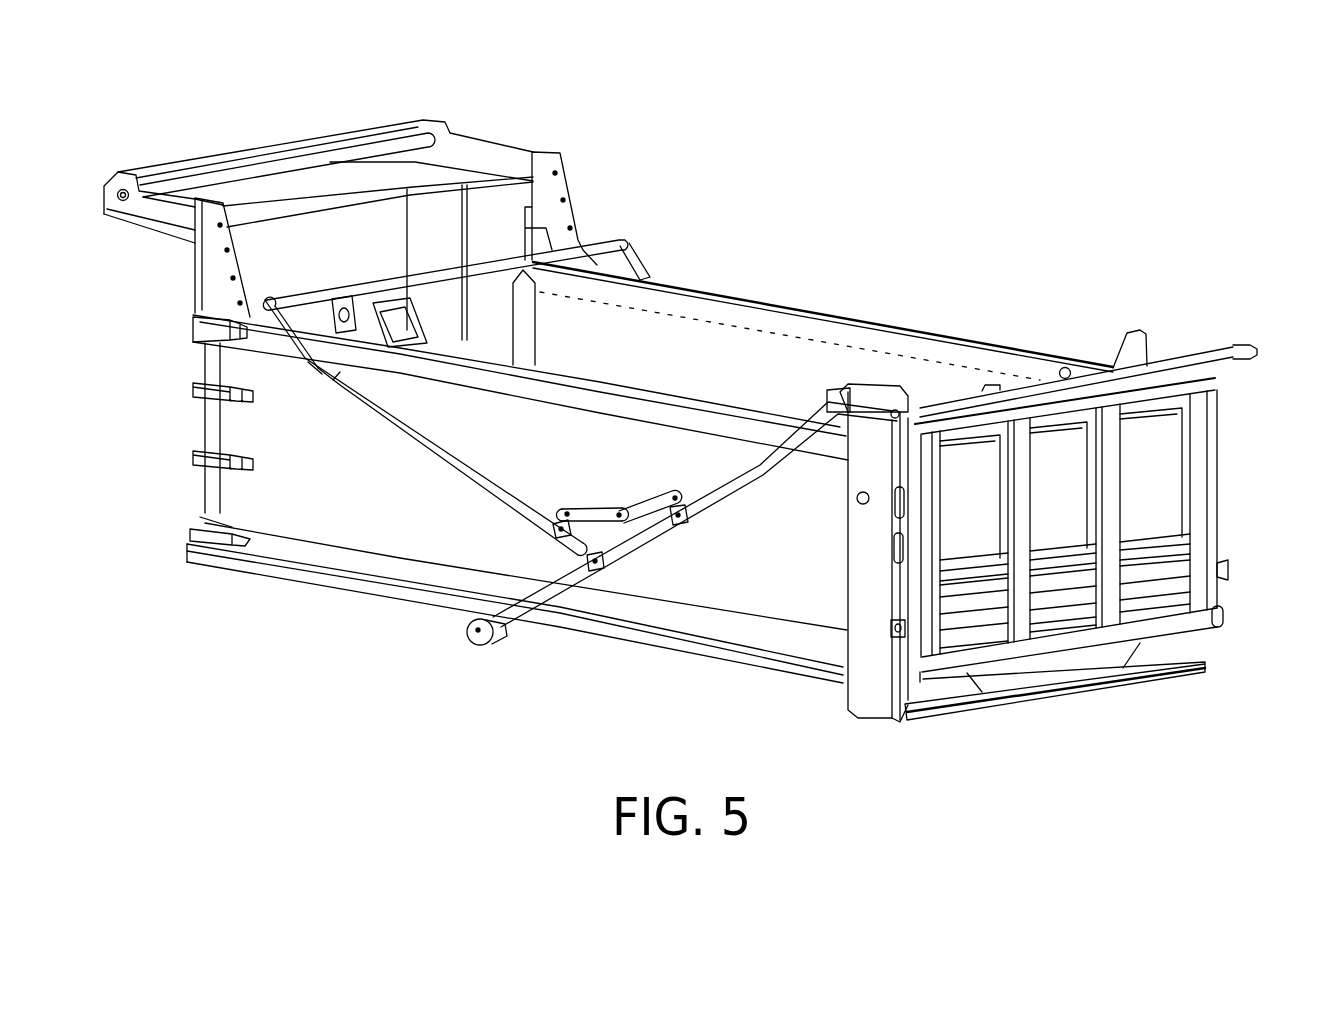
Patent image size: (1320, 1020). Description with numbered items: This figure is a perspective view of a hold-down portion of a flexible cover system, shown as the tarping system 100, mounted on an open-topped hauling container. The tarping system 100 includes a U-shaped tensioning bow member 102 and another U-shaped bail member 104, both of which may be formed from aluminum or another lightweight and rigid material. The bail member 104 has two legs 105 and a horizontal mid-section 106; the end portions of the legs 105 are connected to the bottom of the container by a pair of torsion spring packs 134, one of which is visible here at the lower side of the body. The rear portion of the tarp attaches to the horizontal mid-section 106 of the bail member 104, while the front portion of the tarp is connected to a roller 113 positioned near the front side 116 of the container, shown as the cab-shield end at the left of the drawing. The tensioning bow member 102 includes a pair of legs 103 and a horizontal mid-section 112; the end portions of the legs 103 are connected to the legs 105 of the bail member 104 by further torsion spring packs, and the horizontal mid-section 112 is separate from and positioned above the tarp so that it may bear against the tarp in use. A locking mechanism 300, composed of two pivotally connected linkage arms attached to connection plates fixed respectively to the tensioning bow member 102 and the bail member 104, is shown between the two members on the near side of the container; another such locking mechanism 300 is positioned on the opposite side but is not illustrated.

The tarping system 100 is at (375, 655).
The tensioning bow member 102 is at (373, 413).
The legs 103 is at (640, 255).
The bail member 104 is at (547, 600).
The legs 105 is at (1218, 345).
The horizontal mid-section 106 is at (1063, 388).
The horizontal mid-section 112 is at (397, 282).
The roller 113 is at (263, 170).
The front side 116 is at (192, 414).
The torsion spring packs 134 is at (476, 645).
The locking mechanism 300 is at (620, 492).